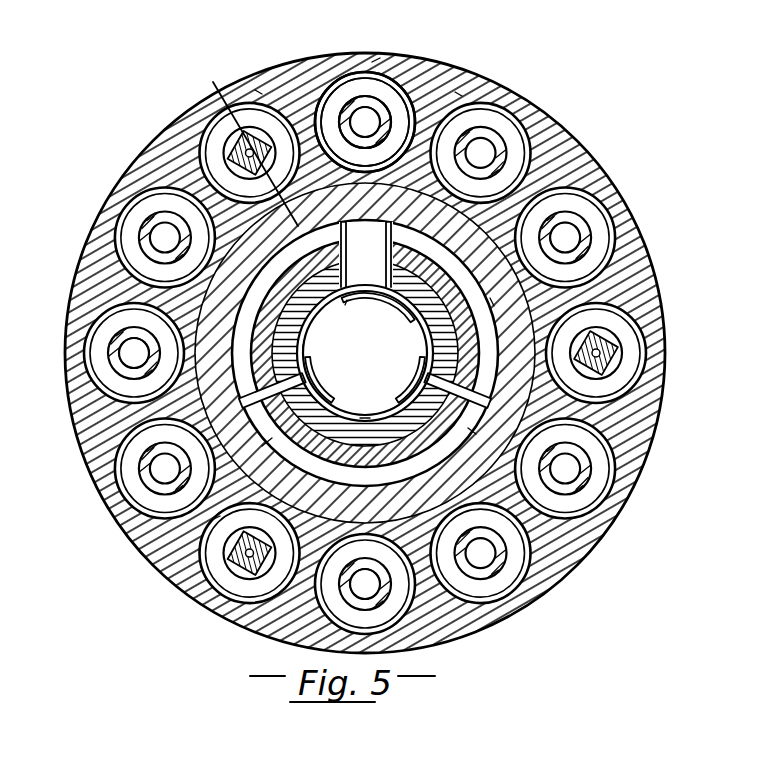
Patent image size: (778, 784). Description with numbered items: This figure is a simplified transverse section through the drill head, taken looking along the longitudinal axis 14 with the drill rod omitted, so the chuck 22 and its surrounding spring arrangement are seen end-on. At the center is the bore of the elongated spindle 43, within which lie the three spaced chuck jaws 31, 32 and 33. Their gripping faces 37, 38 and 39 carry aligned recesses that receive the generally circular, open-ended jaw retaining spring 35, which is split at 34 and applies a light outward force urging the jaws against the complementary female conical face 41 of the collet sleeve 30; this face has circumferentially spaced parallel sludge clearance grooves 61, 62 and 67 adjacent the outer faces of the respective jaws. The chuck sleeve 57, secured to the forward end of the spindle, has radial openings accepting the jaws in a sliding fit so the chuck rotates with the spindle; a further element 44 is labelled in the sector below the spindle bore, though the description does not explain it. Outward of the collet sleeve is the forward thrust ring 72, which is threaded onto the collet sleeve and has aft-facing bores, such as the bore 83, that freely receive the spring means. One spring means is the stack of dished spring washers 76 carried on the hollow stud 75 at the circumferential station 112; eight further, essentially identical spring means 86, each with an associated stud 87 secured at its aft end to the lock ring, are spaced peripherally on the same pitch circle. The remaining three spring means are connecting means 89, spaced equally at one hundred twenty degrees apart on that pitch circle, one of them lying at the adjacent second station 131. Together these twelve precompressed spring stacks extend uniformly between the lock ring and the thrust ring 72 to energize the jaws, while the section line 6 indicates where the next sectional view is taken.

The section line 6- 6 is at (245, 149).
The longitudinal axis 14 is at (365, 353).
The chuck 22 is at (180, 535).
The collet sleeve 30 is at (365, 341).
The chuck jaw 31 is at (356, 245).
The chuck jaw 32 is at (250, 450).
The chuck jaw 33 is at (472, 444).
The split 34 is at (378, 314).
The jaw retaining spring 35 is at (322, 347).
The gripping face 37 is at (332, 318).
The gripping face 38 is at (327, 380).
The gripping face 39 is at (398, 380).
The female conical face 41 is at (524, 305).
The spindle 43 is at (275, 396).
The hub sector 44 is at (350, 432).
The chuck sleeve 57 is at (315, 353).
The sludge clearance groove 61 is at (365, 348).
The sludge clearance groove 62 is at (331, 353).
The sludge clearance groove 67 is at (468, 397).
The forward thrust ring 72 is at (489, 79).
The stud 75 is at (390, 118).
The stack of spring washers 76 is at (371, 115).
The bore 83 is at (365, 97).
The spring means 86 is at (357, 353).
The stud 87 is at (349, 387).
The connecting means 89 is at (376, 353).
The circumferential station 112 is at (400, 46).
The second station 131 is at (270, 63).